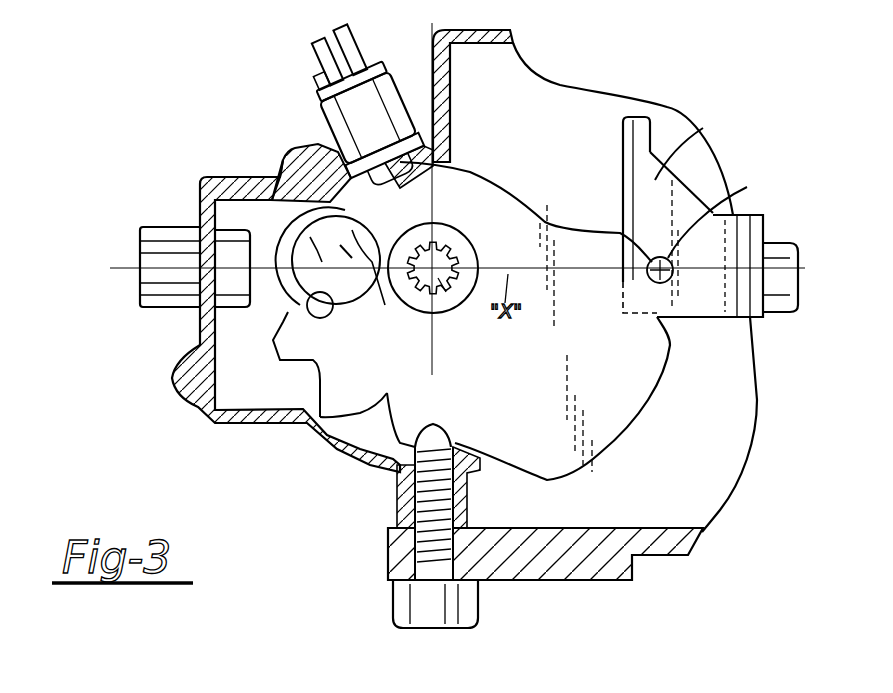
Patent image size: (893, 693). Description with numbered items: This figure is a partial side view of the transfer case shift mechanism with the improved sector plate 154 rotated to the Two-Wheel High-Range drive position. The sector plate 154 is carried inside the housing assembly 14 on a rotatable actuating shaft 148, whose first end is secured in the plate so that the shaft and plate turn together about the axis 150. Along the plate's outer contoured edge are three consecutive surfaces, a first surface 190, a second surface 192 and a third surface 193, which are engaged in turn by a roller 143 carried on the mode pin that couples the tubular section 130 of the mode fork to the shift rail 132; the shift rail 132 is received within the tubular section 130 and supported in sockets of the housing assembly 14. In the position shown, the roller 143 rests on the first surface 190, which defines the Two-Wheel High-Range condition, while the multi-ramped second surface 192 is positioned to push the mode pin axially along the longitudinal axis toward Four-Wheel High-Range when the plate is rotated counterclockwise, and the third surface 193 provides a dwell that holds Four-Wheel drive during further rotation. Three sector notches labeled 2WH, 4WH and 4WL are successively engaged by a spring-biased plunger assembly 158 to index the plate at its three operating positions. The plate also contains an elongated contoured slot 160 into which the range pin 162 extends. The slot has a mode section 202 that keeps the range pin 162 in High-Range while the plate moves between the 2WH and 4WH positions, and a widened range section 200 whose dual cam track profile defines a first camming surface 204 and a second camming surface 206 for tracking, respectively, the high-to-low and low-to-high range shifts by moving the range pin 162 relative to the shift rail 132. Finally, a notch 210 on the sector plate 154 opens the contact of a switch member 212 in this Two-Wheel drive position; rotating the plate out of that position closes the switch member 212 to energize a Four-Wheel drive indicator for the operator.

The housing assembly 14 is at (586, 524).
The tubular section 130 is at (654, 174).
The shift rail 132 is at (773, 300).
The roller 143 is at (752, 186).
The actuating shaft 148 is at (441, 283).
The axis 150 is at (448, 236).
The sector plate 154 is at (526, 184).
The spring-biased plunger assembly 158 is at (456, 474).
The contoured slot 160 is at (348, 256).
The range pin 162 is at (322, 320).
The first surface 190 is at (712, 152).
The second surface 192 is at (646, 297).
The third surface 193 is at (636, 426).
The range section 200 is at (358, 226).
The mode section 202 is at (288, 312).
The first camming surface 204 is at (310, 237).
The second camming surface 206 is at (372, 290).
The notch 210 is at (433, 162).
The switch member 212 is at (360, 186).
The Two-Wheel High-Range sector notch 2WH is at (438, 424).
The Four-Wheel High-Range sector notch 4WH is at (383, 410).
The Four-Wheel Low-Range sector notch 4WL is at (316, 368).